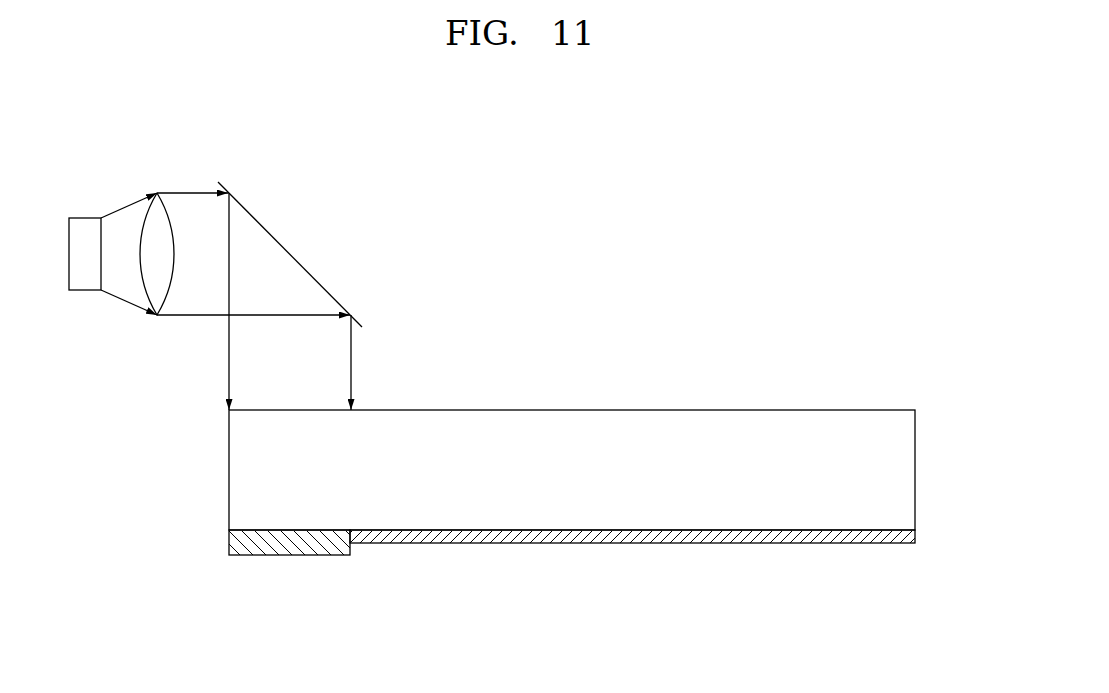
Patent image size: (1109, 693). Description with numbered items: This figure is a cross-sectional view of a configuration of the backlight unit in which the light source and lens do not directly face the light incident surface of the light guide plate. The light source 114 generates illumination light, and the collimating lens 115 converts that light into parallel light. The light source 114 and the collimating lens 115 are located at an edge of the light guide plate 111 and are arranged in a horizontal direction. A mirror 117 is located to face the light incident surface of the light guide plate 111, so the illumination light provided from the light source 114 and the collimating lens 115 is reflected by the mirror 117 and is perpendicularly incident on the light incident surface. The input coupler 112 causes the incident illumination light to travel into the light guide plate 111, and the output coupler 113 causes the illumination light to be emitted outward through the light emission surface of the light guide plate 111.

The light guide plate 111 is at (907, 471).
The input coupler 112 is at (290, 548).
The output coupler 113 is at (917, 536).
The light source 114 is at (85, 282).
The collimating lens 115 is at (161, 304).
The mirror 117 is at (291, 253).